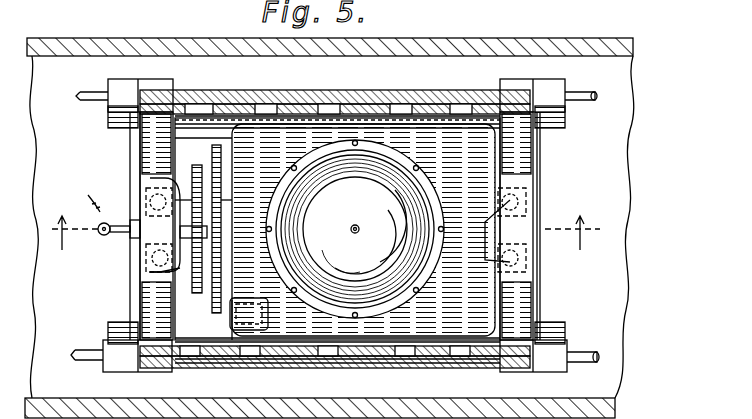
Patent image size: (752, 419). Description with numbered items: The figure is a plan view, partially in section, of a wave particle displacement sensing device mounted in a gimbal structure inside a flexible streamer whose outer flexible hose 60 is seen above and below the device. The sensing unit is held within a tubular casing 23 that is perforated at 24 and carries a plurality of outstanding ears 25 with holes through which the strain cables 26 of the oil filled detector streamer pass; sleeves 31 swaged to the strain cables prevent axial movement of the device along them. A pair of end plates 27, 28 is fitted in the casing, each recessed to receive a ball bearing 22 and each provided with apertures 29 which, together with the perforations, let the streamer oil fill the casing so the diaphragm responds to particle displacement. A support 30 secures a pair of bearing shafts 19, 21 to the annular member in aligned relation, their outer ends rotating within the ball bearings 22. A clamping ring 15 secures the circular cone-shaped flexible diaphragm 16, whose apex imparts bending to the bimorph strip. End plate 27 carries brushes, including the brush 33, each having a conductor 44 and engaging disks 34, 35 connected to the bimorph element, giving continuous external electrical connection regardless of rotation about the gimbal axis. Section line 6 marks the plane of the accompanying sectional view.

The outer flexible hose 60 is at (551, 38).
The support 30 is at (384, 110).
The perforations 24 is at (276, 106).
The tubular casing 23 is at (426, 352).
The sleeves 31 is at (113, 82).
The outstanding ears 25 is at (158, 80).
The strain cables 26 is at (596, 97).
The end plate 27 is at (150, 292).
The end plate 28 is at (530, 308).
The apertures 29 is at (522, 156).
The clamping ring 15 is at (393, 152).
The flexible diaphragm 16 is at (360, 201).
The disk 34 is at (196, 294).
The disk 35 is at (224, 314).
The bearing shaft 21 is at (150, 180).
The ball bearings 22 is at (148, 203).
The brush 33 is at (150, 272).
The bearing shaft 19 is at (515, 200).
The conductor 44 is at (86, 200).
The section line 6 is at (326, 245).